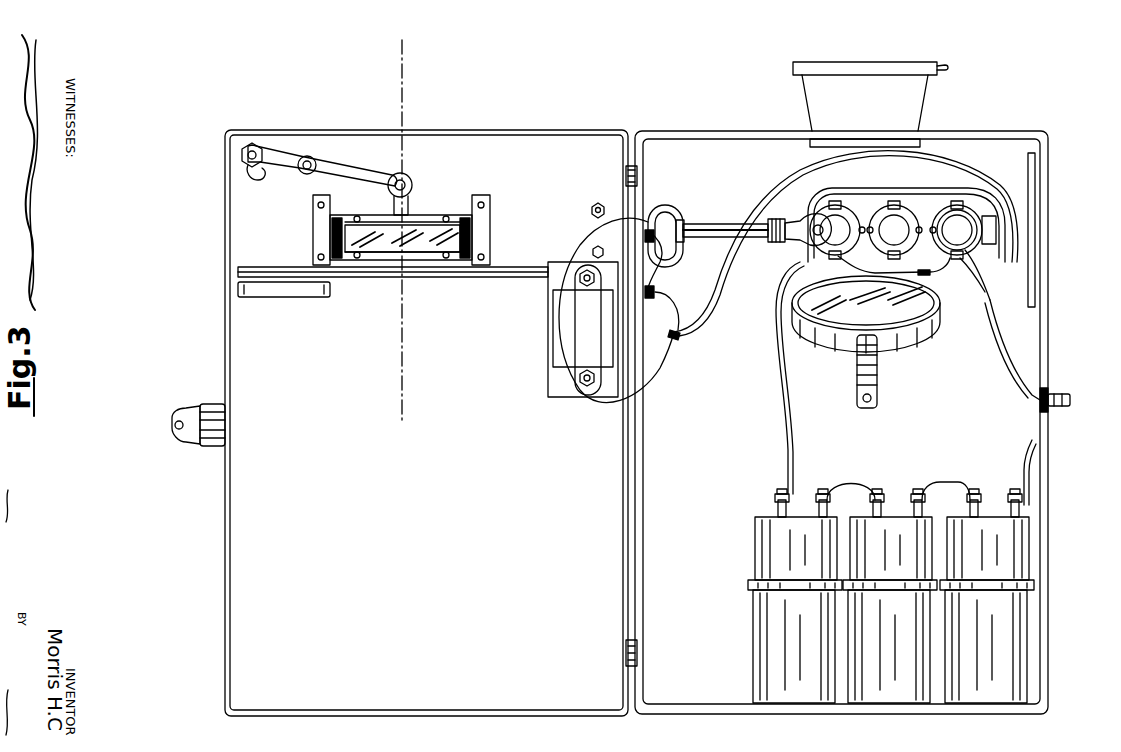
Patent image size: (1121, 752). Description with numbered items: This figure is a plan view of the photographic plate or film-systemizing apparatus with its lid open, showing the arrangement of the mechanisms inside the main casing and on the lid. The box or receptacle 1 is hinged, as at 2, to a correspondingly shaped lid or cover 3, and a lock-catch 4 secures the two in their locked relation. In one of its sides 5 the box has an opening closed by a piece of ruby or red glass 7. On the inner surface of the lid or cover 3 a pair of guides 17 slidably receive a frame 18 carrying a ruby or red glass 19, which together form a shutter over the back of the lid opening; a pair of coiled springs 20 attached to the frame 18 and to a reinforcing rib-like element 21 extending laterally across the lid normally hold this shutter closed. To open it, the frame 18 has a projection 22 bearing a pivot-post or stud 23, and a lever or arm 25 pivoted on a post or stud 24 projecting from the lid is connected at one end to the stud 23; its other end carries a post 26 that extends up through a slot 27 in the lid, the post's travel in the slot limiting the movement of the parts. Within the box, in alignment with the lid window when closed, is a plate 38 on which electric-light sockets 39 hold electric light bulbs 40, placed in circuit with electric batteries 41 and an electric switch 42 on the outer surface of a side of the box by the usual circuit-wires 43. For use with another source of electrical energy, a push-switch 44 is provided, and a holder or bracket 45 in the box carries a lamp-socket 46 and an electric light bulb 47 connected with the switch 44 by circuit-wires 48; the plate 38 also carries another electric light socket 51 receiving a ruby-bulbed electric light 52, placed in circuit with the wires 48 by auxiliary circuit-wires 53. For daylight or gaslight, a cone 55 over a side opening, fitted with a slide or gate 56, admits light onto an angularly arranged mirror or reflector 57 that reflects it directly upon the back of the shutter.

The box or receptacle 1 is at (967, 137).
The hinge 2 is at (626, 176).
The lid or cover 3 is at (230, 566).
The lock-catch 4 is at (201, 444).
The side of box 5 is at (1065, 318).
The ruby or red glass 7 is at (1036, 180).
The guides 17 is at (313, 230).
The frame 18 is at (427, 218).
The ruby or red glass 19 is at (420, 243).
The coiled springs 20 is at (470, 243).
The reinforcing rib-like element 21 is at (507, 273).
The projection 22 is at (407, 197).
The pivot-post or stud 23 is at (397, 178).
The post or stud 24 is at (307, 156).
The lever or arm 25 is at (339, 170).
The post 26 is at (243, 156).
The slot 27 is at (258, 180).
The plate 38 is at (988, 214).
The electric-light sockets 39 is at (920, 215).
The electric light bulbs 40 is at (855, 224).
The electric batteries 41 is at (773, 547).
The electric switch 42 is at (1050, 421).
The circuit-wires 43 is at (793, 432).
The push-switch 44 is at (568, 340).
The holder or bracket 45 is at (698, 230).
The lamp-socket 46 is at (773, 243).
The electric light bulb 47 is at (807, 222).
The circuit-wires 48 is at (590, 236).
The electric light socket 51 is at (985, 223).
The electric light 52 is at (967, 247).
The auxiliary circuit-wires 53 is at (740, 198).
The cone 55 is at (818, 98).
The slide or gate 56 is at (945, 67).
The mirror or reflector 57 is at (895, 316).